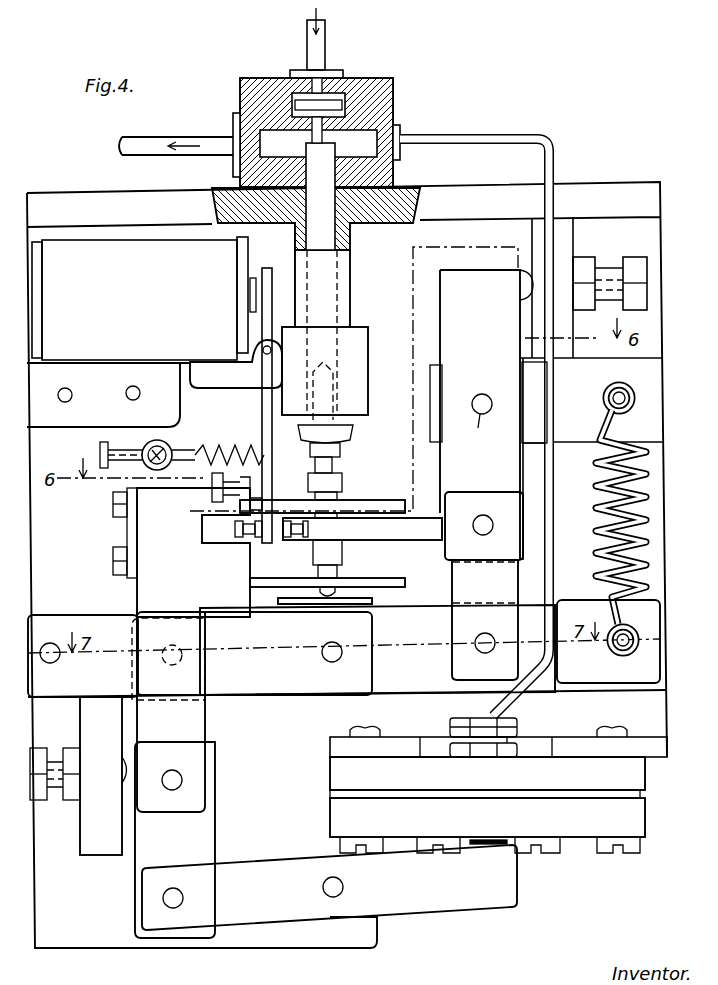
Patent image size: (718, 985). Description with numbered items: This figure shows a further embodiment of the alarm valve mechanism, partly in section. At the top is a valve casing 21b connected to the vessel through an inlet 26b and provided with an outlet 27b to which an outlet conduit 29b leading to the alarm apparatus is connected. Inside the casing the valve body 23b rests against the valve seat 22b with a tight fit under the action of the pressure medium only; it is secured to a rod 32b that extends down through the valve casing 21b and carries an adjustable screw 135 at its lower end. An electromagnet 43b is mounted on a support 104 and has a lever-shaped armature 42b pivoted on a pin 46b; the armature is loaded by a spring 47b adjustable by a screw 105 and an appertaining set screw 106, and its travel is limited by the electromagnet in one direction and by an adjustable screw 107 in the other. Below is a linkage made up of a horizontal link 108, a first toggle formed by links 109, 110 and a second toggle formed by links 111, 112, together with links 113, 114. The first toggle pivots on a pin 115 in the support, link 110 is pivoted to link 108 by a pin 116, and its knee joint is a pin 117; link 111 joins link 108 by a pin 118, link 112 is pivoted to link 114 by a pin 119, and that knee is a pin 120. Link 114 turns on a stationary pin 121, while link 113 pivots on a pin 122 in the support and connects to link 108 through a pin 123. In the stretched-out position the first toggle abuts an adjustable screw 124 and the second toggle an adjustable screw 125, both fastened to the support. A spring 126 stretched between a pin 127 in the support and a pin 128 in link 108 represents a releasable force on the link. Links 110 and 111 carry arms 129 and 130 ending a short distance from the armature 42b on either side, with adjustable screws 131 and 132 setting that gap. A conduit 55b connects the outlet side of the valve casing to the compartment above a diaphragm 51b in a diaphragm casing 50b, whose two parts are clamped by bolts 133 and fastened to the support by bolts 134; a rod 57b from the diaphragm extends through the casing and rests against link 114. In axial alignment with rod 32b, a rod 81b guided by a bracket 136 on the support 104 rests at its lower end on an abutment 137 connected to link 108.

The valve casing 21b is at (398, 93).
The valve seat 22b is at (290, 112).
The valve body 23b is at (350, 107).
The inlet 26b is at (340, 72).
The outlet 27b is at (240, 120).
The outlet conduit 29b is at (150, 138).
The rod 32b is at (340, 236).
The armature 42b is at (260, 292).
The electromagnet 43b is at (82, 258).
The pin 46b is at (262, 348).
The spring 47b is at (232, 450).
The diaphragm casing 50b is at (335, 826).
The diaphragm 51b is at (335, 796).
The conduit 55b is at (545, 140).
The rod 57b is at (480, 840).
The rod 81b is at (340, 451).
The support 104 is at (588, 226).
The screw 105 is at (110, 455).
The set screw 106 is at (157, 442).
The adjustable screw 107 is at (212, 490).
The horizontal link 108 is at (393, 677).
The toggle link 109 is at (452, 313).
The toggle link 110 is at (452, 575).
The toggle link 111 is at (185, 718).
The toggle link 112 is at (185, 828).
The link 113 is at (282, 696).
The link 114 is at (414, 897).
The pin 115 is at (487, 423).
The pin 116 is at (475, 643).
The pin 117 is at (473, 526).
The pin 118 is at (196, 660).
The pin 119 is at (183, 897).
The pin 120 is at (182, 780).
The stationary pin 121 is at (323, 890).
The pin 122 is at (66, 620).
The pin 123 is at (322, 652).
The adjustable screw 124 is at (606, 278).
The adjustable screw 125 is at (55, 800).
The spring 126 is at (602, 530).
The pin 127 is at (610, 392).
The pin 128 is at (615, 652).
The arm 129 is at (388, 503).
The arm 130 is at (217, 546).
The adjustable screw 131 is at (310, 530).
The adjustable screw 132 is at (233, 528).
The bolts 133 is at (595, 845).
The bolts 134 is at (355, 736).
The adjustable screw 135 is at (345, 433).
The bracket 136 is at (262, 583).
The abutment 137 is at (355, 603).